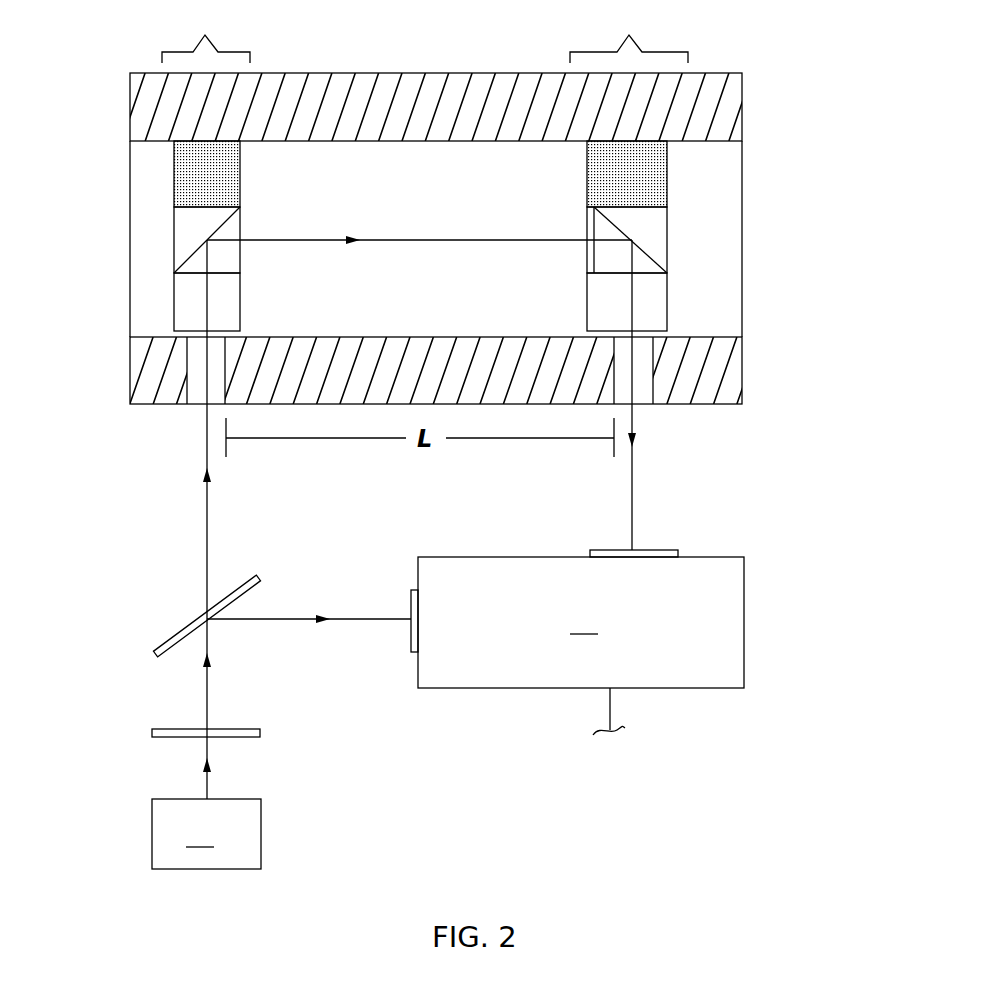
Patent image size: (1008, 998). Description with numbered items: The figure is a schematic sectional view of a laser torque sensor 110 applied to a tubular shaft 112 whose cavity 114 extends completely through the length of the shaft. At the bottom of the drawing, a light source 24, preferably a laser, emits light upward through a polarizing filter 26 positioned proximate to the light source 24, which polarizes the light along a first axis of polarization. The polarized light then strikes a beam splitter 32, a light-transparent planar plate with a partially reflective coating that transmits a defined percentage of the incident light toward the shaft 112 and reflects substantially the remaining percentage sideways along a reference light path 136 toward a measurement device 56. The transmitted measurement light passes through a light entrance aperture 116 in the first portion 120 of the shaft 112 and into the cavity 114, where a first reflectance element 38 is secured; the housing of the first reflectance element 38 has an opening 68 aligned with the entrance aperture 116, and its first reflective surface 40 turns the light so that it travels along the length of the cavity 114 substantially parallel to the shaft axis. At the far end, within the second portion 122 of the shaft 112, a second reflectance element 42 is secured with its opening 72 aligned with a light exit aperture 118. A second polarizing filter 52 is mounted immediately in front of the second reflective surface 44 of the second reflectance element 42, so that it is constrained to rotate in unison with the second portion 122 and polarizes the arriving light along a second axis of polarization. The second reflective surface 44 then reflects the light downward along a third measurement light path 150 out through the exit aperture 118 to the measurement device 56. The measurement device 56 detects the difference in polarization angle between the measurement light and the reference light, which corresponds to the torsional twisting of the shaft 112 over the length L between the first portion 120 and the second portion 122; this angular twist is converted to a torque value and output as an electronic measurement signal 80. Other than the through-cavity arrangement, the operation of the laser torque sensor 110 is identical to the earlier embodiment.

The light source 24 is at (206, 834).
The polarizing filter 26 is at (163, 739).
The beam splitter 32 is at (165, 641).
The first reflectance element 38 is at (187, 178).
The first reflective surface 40 is at (231, 224).
The second reflectance element 42 is at (655, 172).
The second reflective surface 44 is at (607, 223).
The polarizing filter 52 is at (583, 263).
The measurement device 56 is at (577, 619).
The opening 68 is at (180, 302).
The opening 72 is at (653, 305).
The electronic measurement signal 80 is at (612, 708).
The laser torque sensor 110 is at (876, 633).
The shaft 112 is at (718, 95).
The cavity 114 is at (431, 190).
The light entrance aperture 116 is at (197, 395).
The light exit aperture 118 is at (645, 395).
The first portion 120 is at (209, 42).
The second portion 122 is at (633, 42).
The reference beam 136 is at (283, 618).
The output beam 150 is at (633, 486).